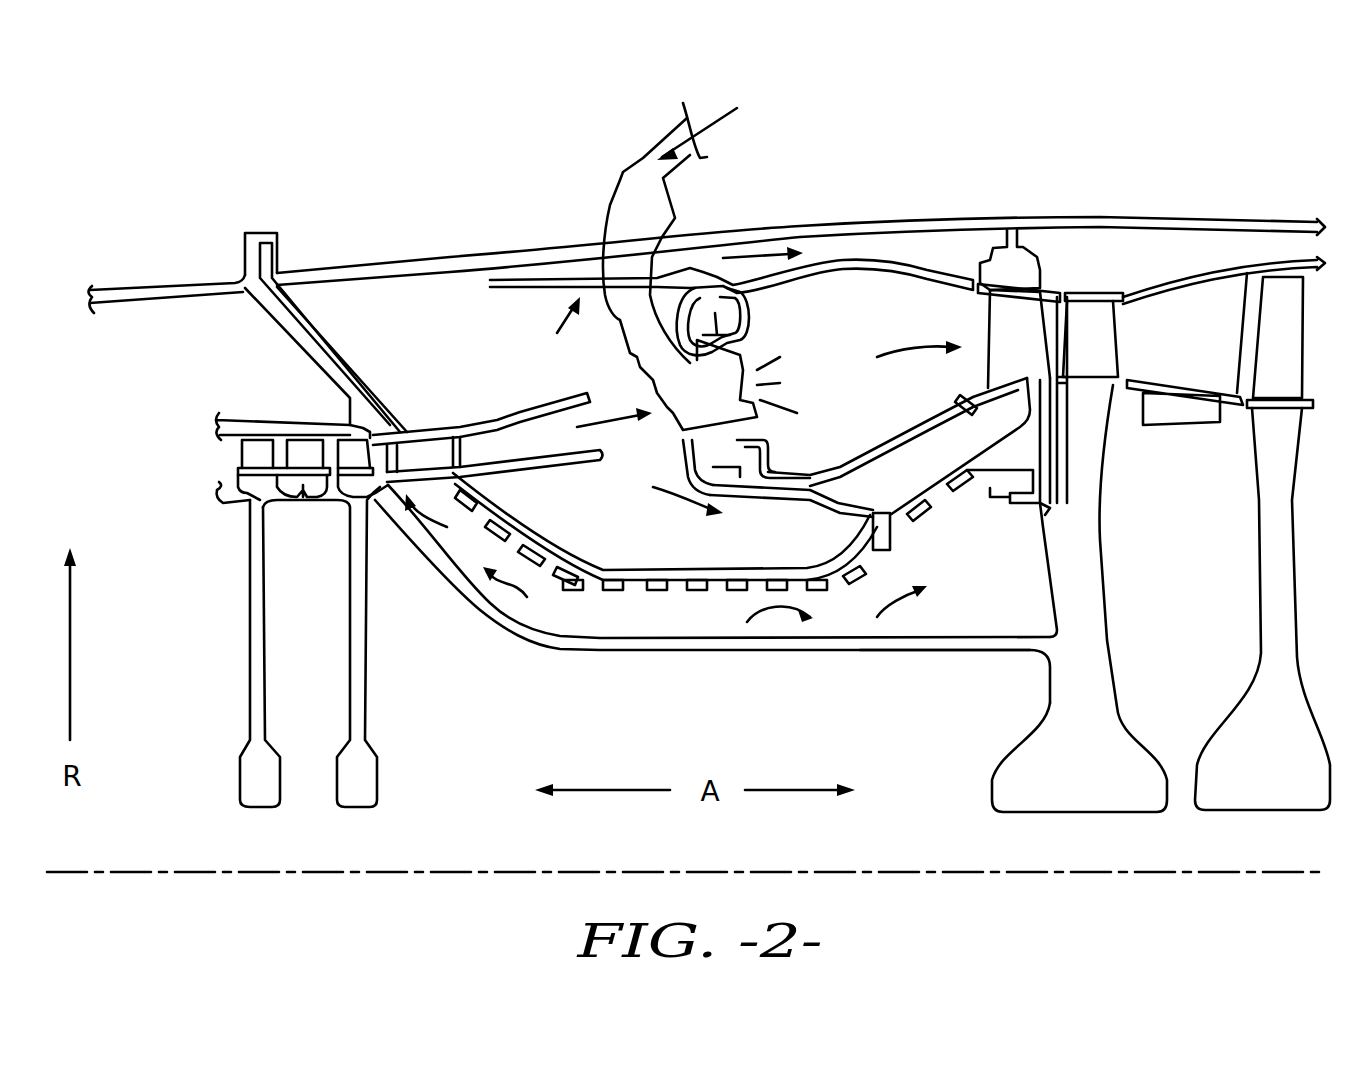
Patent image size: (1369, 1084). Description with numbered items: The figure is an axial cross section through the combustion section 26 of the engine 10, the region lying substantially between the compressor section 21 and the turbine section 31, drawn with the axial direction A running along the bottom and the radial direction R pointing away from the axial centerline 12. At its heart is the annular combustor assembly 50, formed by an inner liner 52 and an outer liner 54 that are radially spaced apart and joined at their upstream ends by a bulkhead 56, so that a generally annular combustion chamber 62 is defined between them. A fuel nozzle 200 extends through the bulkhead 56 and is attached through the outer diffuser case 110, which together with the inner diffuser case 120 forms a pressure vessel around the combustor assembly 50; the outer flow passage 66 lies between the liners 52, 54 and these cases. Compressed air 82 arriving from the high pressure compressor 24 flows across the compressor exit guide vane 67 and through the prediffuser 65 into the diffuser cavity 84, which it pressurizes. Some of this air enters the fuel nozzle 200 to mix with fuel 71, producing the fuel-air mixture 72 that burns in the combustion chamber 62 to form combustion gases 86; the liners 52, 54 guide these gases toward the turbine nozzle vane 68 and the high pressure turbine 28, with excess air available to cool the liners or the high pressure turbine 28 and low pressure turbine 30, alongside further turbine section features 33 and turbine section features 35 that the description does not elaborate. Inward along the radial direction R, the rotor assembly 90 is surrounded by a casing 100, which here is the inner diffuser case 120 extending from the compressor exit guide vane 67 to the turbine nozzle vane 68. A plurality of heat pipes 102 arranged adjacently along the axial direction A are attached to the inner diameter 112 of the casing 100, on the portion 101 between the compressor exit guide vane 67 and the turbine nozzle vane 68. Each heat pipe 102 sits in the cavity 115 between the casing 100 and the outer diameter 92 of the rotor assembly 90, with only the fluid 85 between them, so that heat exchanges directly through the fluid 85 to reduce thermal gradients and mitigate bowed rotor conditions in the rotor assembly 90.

The engine 10 is at (707, 176).
The axial centerline 12 is at (1035, 873).
The compressor section 21 is at (361, 327).
The high pressure compressor 24 is at (388, 717).
The combustion section 26 is at (852, 160).
The high pressure turbine 28 is at (1097, 323).
The low pressure turbine 30 is at (1290, 345).
The turbine section 31 is at (1255, 192).
The turbine rotor disk 33 is at (1115, 542).
The seal 35 is at (1096, 277).
The combustor assembly 50 is at (775, 244).
The inner liner 52 is at (868, 450).
The outer liner 54 is at (873, 275).
The bulkhead 56 is at (765, 312).
The combustion chamber 62 is at (830, 381).
The prediffuser 65 is at (561, 442).
The outer flow passage 66 is at (923, 253).
The compressor exit guide vane 67 is at (440, 447).
The turbine nozzle vane 68 is at (1019, 396).
The fuel 71 is at (723, 115).
The fuel-air mixture 72 is at (783, 413).
The compressed air 82 is at (612, 420).
The diffuser cavity 84 is at (415, 356).
The fluid 85 is at (505, 605).
The combustion gases 86 is at (903, 353).
The rotor assembly 90 is at (933, 662).
The outer diameter of the rotor assembly 92 is at (957, 633).
The casing 100 is at (240, 244).
The portion of the casing 101 is at (553, 575).
The heat pipe 102 is at (450, 567).
The outer diffuser case 110 is at (528, 245).
The inner diameter of the casing 112 is at (637, 598).
The cavity 115 is at (741, 501).
The inner diffuser case 120 is at (630, 557).
The fuel nozzle 200 is at (640, 165).